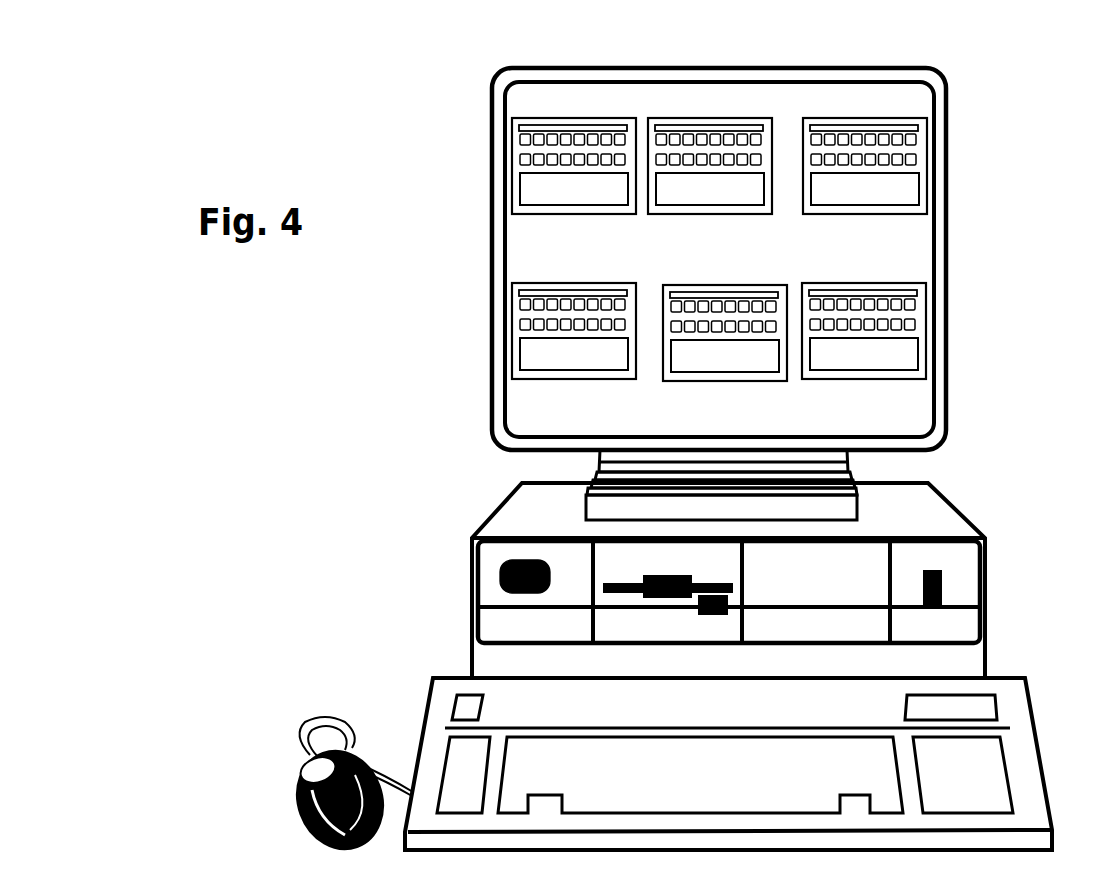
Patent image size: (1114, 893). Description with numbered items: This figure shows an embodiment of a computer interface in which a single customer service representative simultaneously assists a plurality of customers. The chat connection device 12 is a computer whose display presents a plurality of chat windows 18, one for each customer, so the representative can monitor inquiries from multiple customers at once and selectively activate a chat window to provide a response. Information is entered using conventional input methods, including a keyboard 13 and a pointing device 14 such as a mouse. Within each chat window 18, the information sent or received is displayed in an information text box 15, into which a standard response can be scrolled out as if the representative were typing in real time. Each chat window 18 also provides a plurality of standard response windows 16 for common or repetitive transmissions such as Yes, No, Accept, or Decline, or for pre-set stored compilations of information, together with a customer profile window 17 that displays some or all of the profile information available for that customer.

The chat connection device 12 is at (614, 63).
The keyboard 13 is at (1030, 710).
The pointing device 14 is at (300, 778).
The information text box 15 is at (585, 205).
The standard response windows 16 is at (513, 144).
The customer profile window 17 is at (553, 128).
The chat windows 18 is at (610, 118).